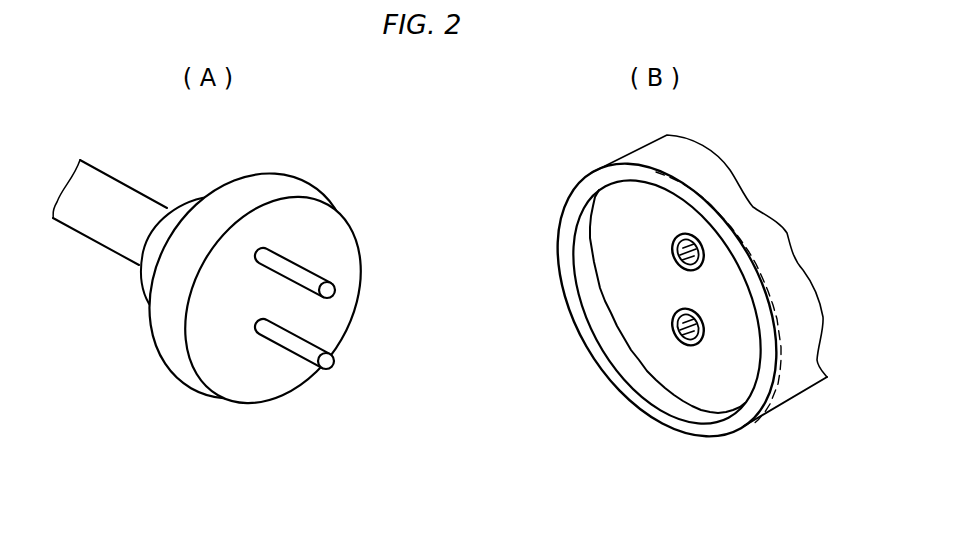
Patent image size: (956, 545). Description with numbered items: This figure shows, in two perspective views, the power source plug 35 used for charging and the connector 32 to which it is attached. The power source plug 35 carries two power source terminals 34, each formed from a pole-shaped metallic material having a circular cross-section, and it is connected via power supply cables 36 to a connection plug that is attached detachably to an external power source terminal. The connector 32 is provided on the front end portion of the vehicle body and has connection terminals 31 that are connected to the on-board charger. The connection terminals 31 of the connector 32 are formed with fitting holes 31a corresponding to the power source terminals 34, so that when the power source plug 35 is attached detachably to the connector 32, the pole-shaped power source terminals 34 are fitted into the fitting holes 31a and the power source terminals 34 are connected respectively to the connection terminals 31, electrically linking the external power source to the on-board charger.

The connection terminal 31 is at (703, 266).
The fitting hole 31a is at (700, 248).
The connector 32 is at (730, 434).
The power source terminal 34 is at (300, 269).
The power source plug 35 is at (265, 180).
The power supply cable 36 is at (108, 181).